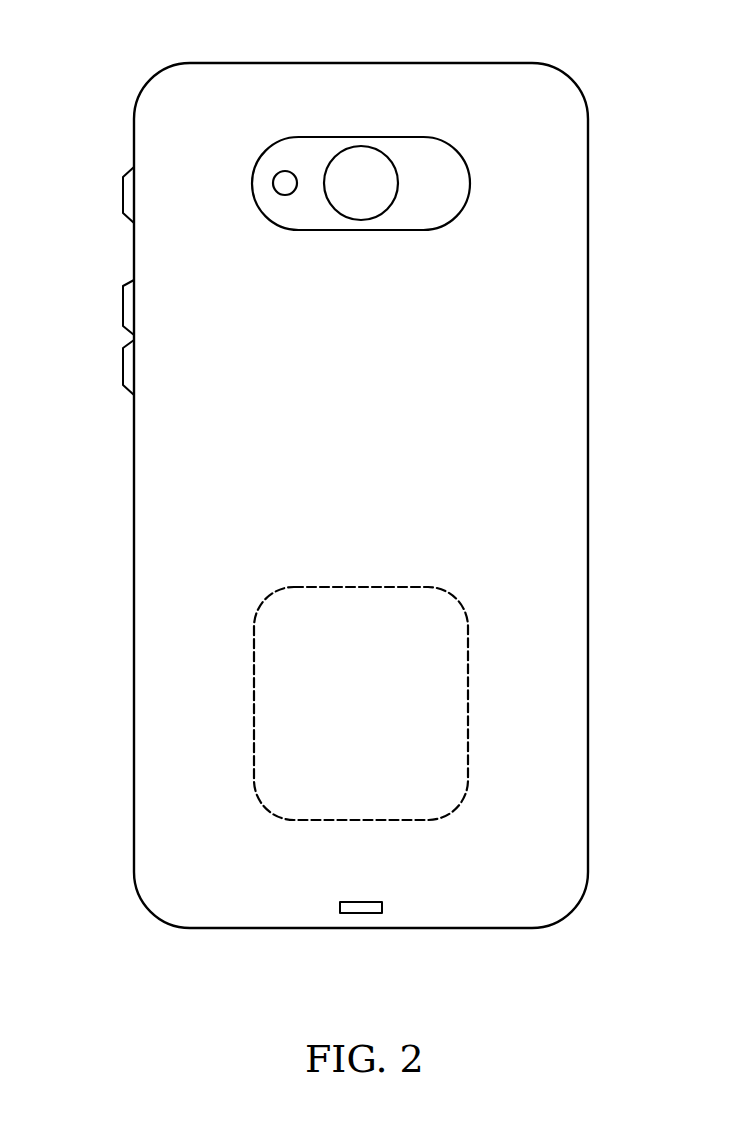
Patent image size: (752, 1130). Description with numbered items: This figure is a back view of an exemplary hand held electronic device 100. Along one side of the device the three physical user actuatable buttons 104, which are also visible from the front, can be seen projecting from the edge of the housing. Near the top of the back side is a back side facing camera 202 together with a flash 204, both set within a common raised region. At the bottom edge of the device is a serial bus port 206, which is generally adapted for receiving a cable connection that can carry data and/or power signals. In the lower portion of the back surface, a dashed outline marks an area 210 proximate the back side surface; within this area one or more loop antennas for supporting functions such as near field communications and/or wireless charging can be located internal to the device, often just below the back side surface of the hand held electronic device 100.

The hand held electronic device 100 is at (553, 340).
The physical user actuatable buttons 104 is at (123, 196).
The back side facing camera 202 is at (361, 146).
The flash 204 is at (285, 170).
The serial bus port 206 is at (361, 913).
The area 210 is at (468, 704).